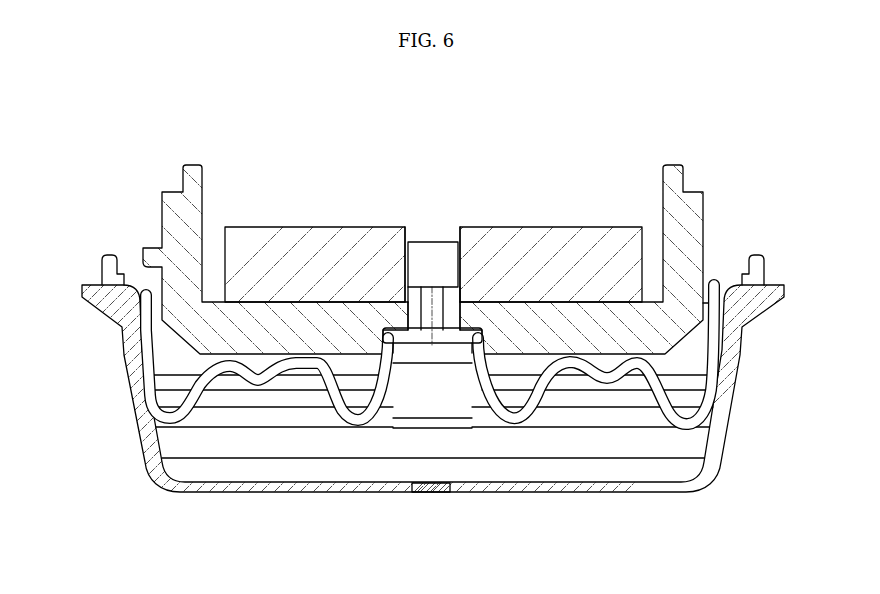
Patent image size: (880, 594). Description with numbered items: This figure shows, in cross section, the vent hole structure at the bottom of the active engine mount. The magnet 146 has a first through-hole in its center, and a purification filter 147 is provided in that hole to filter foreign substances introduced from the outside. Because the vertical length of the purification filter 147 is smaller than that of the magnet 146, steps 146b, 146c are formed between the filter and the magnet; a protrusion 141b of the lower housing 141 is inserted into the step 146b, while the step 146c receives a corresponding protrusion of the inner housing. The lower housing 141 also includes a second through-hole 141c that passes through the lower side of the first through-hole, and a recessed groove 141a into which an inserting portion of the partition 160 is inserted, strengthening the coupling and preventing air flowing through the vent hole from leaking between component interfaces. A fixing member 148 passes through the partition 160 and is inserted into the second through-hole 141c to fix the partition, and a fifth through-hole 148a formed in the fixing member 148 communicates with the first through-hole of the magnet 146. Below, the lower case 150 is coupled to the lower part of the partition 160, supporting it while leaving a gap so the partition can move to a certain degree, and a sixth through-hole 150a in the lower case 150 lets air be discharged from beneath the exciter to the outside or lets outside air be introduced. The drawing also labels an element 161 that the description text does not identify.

The lower housing 141 is at (170, 220).
The recessed groove 141a is at (385, 340).
The protrusion 141b is at (407, 300).
The second through-hole 141c is at (400, 310).
The magnet 146 is at (303, 226).
The step 146b is at (408, 243).
The step 146c is at (460, 294).
The purification filter 147 is at (408, 262).
The fixing member 148 is at (450, 326).
The fifth through-hole 148a is at (432, 315).
The lower case 150 is at (731, 447).
The sixth through-hole 150a is at (436, 495).
The partition 160 is at (248, 378).
The spring fixing portion 161 is at (480, 360).